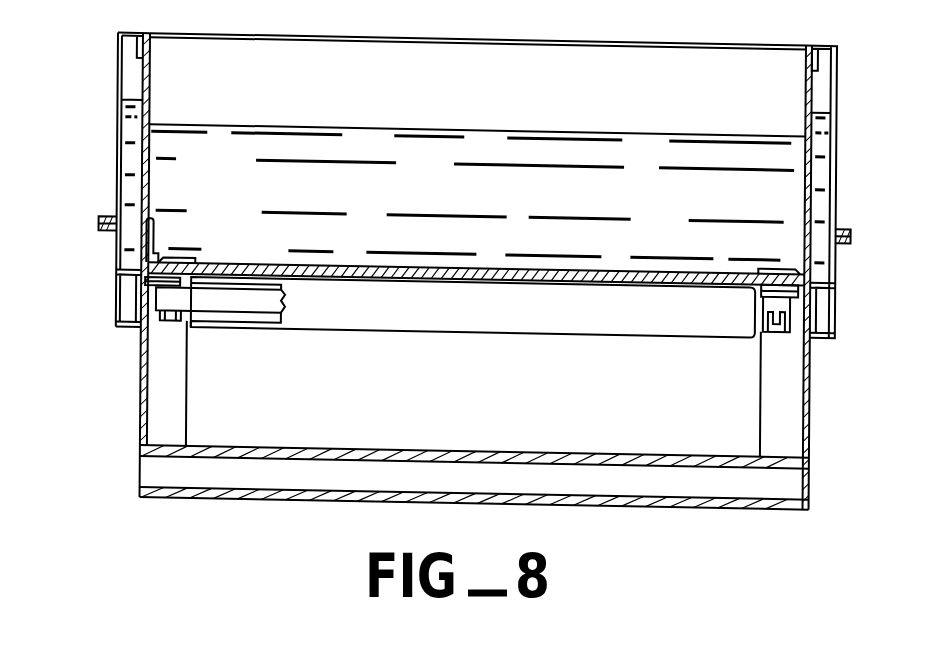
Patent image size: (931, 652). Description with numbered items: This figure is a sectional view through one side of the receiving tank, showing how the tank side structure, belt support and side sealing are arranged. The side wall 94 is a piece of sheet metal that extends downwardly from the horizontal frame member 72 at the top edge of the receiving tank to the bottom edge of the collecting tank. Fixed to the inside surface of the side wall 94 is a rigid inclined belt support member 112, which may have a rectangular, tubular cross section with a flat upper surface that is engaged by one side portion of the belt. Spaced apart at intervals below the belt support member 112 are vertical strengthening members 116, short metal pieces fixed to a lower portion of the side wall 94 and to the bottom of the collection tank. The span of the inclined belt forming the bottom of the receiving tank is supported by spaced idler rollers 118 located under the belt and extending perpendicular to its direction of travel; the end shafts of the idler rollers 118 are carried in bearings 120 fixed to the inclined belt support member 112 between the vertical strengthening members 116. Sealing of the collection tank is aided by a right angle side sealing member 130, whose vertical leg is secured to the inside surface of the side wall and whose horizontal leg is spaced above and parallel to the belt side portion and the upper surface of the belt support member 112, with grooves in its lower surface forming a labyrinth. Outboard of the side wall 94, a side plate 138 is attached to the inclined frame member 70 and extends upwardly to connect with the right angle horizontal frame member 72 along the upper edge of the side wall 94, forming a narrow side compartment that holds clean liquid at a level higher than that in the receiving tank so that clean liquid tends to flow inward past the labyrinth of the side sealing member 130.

The horizontal frame member 72 is at (130, 33).
The side plate 138 is at (117, 128).
The side wall 94 is at (150, 181).
The side sealing member 130 is at (150, 243).
The inclined belt support member 112 is at (212, 268).
The inclined frame member 70 is at (120, 285).
The bearing 120 is at (177, 322).
The idler roller 118 is at (380, 315).
The vertical strengthening member 116 is at (172, 397).